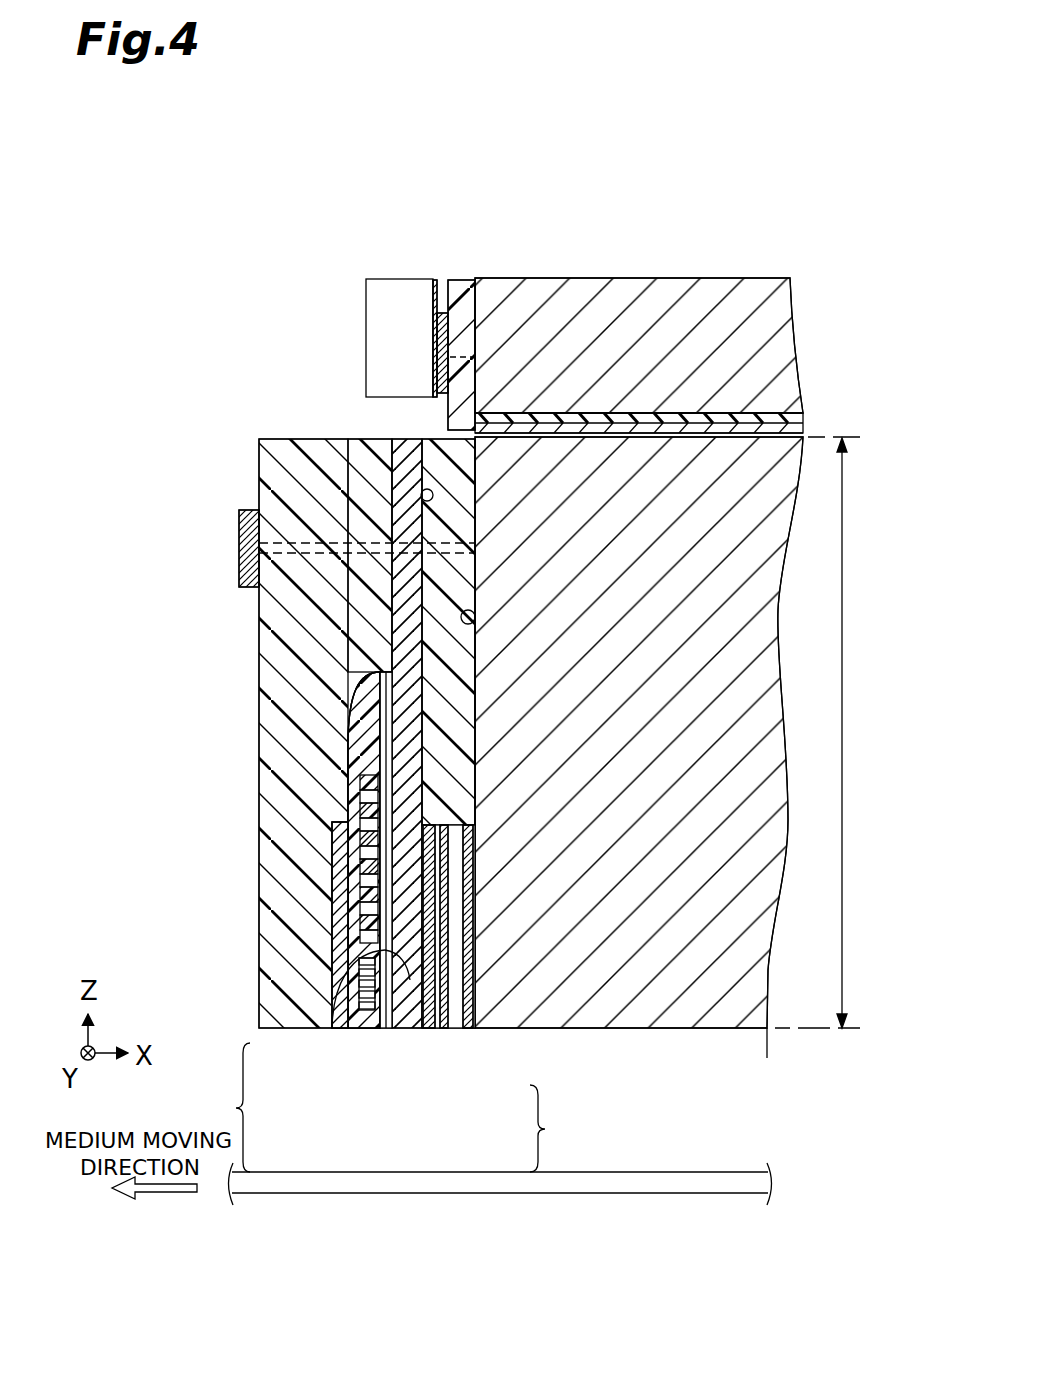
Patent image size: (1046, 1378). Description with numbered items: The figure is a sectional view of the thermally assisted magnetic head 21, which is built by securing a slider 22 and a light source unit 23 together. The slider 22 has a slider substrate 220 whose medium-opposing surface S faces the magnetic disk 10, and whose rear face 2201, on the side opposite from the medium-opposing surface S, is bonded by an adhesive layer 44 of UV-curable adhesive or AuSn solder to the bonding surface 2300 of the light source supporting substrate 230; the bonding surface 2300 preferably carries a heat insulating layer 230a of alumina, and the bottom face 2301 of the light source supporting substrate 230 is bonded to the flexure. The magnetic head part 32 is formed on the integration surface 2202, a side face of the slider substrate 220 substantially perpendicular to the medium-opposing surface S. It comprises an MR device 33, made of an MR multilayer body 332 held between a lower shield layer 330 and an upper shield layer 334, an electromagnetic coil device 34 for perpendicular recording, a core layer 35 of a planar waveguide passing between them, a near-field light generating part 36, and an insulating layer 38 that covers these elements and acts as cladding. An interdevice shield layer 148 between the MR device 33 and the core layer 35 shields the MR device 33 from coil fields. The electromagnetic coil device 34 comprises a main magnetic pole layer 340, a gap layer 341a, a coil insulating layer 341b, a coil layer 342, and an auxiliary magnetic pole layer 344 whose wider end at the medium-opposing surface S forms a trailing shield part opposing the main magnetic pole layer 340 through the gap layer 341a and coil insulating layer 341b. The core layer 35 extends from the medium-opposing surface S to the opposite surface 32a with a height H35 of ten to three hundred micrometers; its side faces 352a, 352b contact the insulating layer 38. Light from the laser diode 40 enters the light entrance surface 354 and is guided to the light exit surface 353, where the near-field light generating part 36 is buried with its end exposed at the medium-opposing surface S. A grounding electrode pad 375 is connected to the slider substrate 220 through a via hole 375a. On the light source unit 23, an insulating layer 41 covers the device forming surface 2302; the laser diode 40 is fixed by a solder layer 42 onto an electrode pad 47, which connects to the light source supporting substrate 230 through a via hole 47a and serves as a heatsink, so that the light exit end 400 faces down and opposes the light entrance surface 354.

The recording medium 10 is at (693, 1195).
The thermally assisted magnetic head 21 is at (292, 216).
The slider 22 is at (222, 947).
The light source unit 23 is at (238, 292).
The magnetic head part 32 is at (232, 444).
The surface of the magnetic head part opposite from the medium-opposing surface 32a is at (280, 440).
The MR device 33 is at (554, 1128).
The electromagnetic coil device 34 is at (227, 1107).
The core layer 35 is at (405, 710).
The near-field light generating part 36 is at (407, 1030).
The insulating layer 38 is at (285, 683).
The laser diode 40 is at (365, 345).
The insulating layer 41 is at (458, 282).
The solder layer 42 is at (435, 280).
The adhesive layer 44 is at (767, 432).
The electrode pad 47 is at (440, 335).
The via hole 47a is at (458, 392).
The interdevice shield layer 148 is at (433, 1030).
The slider substrate 220 is at (602, 1030).
The light source supporting substrate 230 is at (740, 290).
The heat insulating layer 230a is at (562, 412).
The lower shield layer 330 is at (443, 1030).
The MR multilayer body 332 is at (456, 1030).
The upper shield layer 334 is at (470, 1030).
The main magnetic pole layer 340 is at (378, 1030).
The gap layer 341a is at (410, 710).
The coil insulating layer 341b is at (362, 747).
The coil layer 342 is at (365, 787).
The auxiliary magnetic pole layer 344 is at (355, 1030).
The side face of the core layer 352a is at (393, 476).
The side face of the core layer 352b is at (426, 497).
The light exit surface 353 is at (390, 1030).
The light entrance surface 354 is at (407, 437).
The grounding electrode pad 375 is at (240, 545).
The via hole 375a is at (318, 553).
The light exit end of the laser diode 400 is at (405, 400).
The rear face of the slider substrate 2201 is at (682, 427).
The integration surface 2202 is at (255, 652).
The bonding surface 2300 is at (628, 415).
The bottom face of the light source supporting substrate 2301 is at (637, 420).
The device forming surface 2302 is at (470, 292).
The medium-opposing surface S is at (690, 1030).
The height of the core layer H35 is at (868, 733).